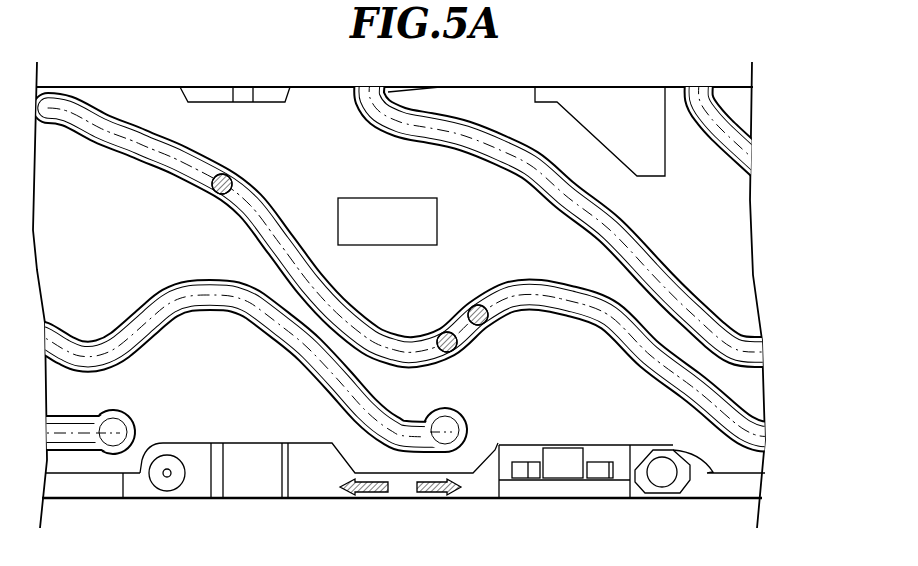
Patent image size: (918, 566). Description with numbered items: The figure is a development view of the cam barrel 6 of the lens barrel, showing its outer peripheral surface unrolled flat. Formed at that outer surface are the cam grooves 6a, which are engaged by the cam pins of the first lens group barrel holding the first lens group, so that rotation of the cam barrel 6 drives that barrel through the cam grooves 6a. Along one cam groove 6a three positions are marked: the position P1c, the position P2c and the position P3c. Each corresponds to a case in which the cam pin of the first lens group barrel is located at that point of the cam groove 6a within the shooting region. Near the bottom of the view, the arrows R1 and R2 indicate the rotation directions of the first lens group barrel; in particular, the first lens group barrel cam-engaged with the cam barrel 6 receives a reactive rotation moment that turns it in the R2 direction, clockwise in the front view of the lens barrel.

The cam barrel 6 is at (728, 264).
The cam groove 6a is at (530, 303).
The position P1c is at (474, 306).
The position P2c is at (443, 333).
The position P3c is at (262, 159).
The arrow R1 is at (364, 506).
The arrow R2 is at (439, 506).